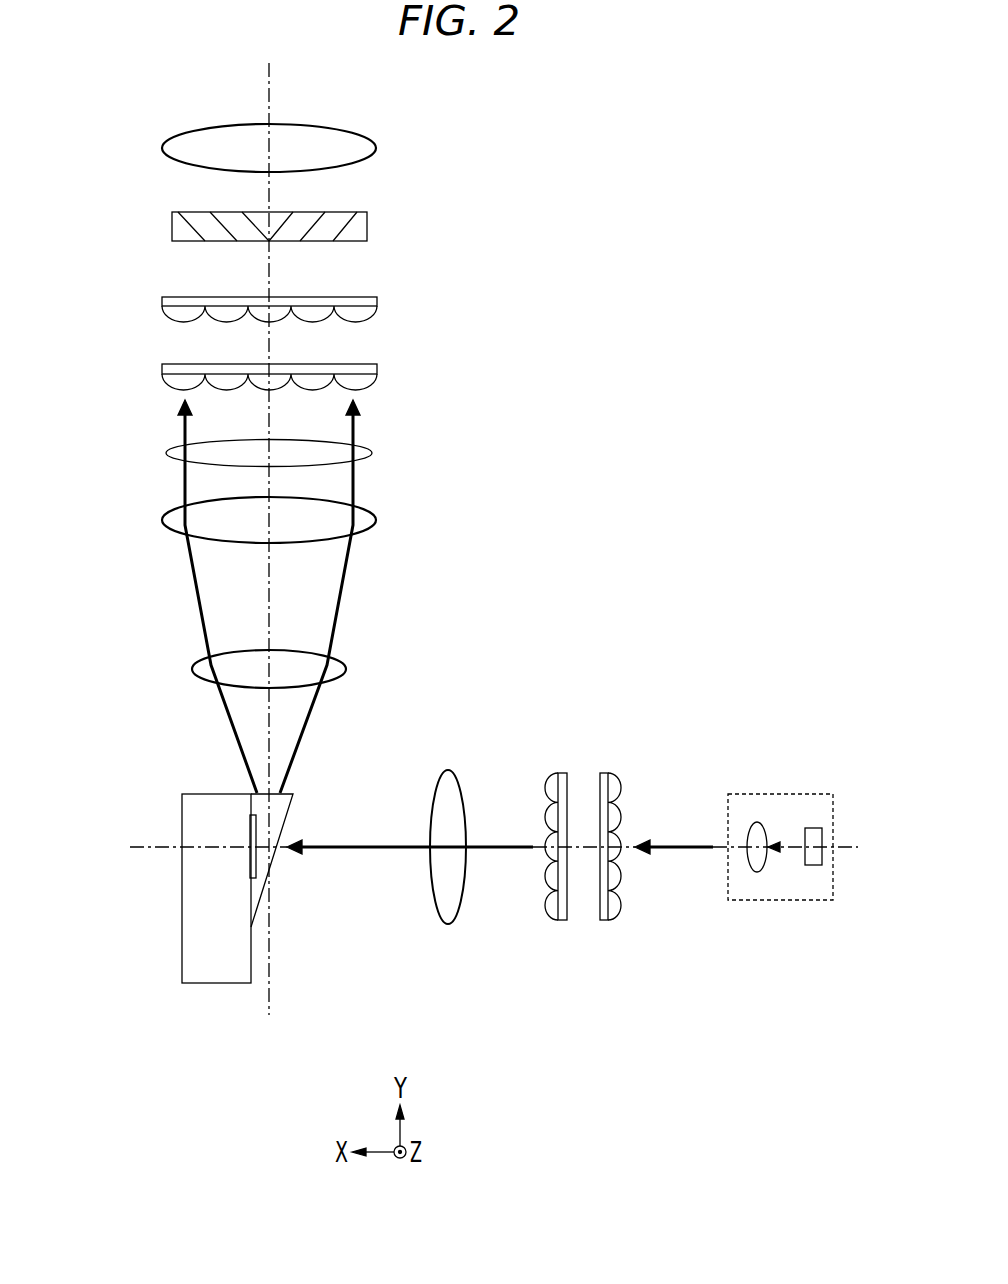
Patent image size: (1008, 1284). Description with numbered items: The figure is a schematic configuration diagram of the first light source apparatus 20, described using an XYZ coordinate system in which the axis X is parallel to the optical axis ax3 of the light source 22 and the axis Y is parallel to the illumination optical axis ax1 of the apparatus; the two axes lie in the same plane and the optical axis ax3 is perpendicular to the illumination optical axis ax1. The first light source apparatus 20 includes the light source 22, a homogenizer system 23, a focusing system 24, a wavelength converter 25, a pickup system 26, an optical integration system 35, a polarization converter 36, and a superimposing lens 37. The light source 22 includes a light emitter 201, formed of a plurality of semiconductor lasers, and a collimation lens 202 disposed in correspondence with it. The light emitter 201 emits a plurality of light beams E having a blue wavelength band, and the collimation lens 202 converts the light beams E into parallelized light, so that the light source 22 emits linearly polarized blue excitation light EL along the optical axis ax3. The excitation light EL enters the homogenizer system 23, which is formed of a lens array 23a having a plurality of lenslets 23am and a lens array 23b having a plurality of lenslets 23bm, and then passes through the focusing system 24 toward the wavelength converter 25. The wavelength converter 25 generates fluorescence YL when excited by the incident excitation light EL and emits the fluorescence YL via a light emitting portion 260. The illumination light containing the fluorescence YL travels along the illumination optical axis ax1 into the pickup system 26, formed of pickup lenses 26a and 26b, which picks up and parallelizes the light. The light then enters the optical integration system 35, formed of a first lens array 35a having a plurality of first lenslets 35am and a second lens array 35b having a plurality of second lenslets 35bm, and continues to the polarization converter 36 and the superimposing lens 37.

The first light source apparatus 20 is at (648, 132).
The light source 22 is at (790, 850).
The light emitter 201 is at (813, 835).
The collimation lens 202 is at (757, 863).
The homogenizer system 23 is at (581, 880).
The lens array 23a is at (628, 857).
The lens array 23b is at (542, 857).
The lenslets 23am is at (615, 790).
The lenslets 23bm is at (548, 790).
The focusing system 24 is at (453, 908).
The wavelength converter 25 is at (208, 1003).
The light emitting portion 260 is at (287, 790).
The pickup system 26 is at (356, 592).
The pickup lens 26a is at (337, 660).
The pickup lens 26b is at (360, 535).
The optical integration system 35 is at (302, 348).
The first lens array 35a is at (275, 378).
The second lens array 35b is at (275, 317).
The first lenslets 35am is at (165, 390).
The second lenslets 35bm is at (165, 322).
The polarization converter 36 is at (367, 230).
The superimposing lens 37 is at (327, 132).
The fluorescence YL is at (360, 447).
The excitation light EL is at (403, 845).
The light beams E is at (793, 843).
The illumination optical axis ax1 is at (267, 90).
The optical axis ax3 is at (150, 847).